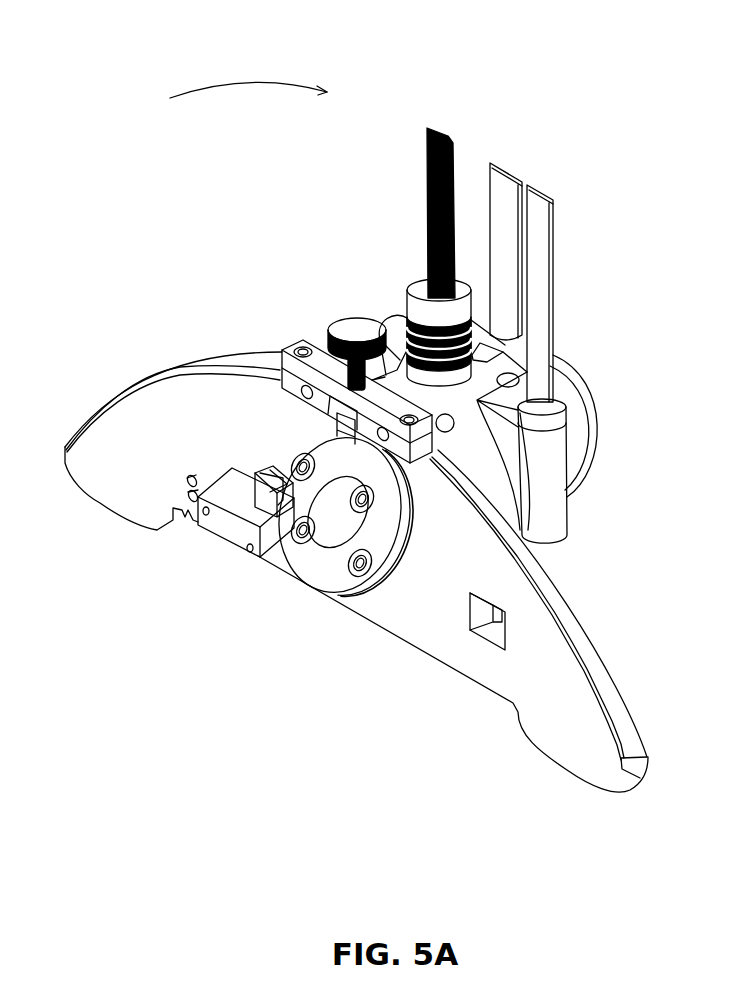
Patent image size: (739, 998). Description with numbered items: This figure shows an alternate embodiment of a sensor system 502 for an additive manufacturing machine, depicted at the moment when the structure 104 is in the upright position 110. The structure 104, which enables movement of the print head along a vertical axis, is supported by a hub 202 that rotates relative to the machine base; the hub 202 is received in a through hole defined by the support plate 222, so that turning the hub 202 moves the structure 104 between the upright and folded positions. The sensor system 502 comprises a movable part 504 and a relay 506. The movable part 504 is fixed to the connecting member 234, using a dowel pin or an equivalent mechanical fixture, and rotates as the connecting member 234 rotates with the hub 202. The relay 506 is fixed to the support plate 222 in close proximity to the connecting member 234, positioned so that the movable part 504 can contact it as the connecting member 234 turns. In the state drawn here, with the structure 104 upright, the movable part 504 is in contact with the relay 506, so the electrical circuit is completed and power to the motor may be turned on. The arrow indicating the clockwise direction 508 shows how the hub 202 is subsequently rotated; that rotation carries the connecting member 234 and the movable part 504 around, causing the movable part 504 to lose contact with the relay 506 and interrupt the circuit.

The clockwise direction 508 is at (248, 61).
The sensor system 502 is at (148, 421).
The movable part 504 is at (227, 388).
The relay 506 is at (219, 540).
The connecting member 234 is at (336, 544).
The support plate 222 is at (453, 621).
The structure 104 is at (491, 237).
The upright position 110 is at (556, 282).
The hub 202 is at (511, 429).